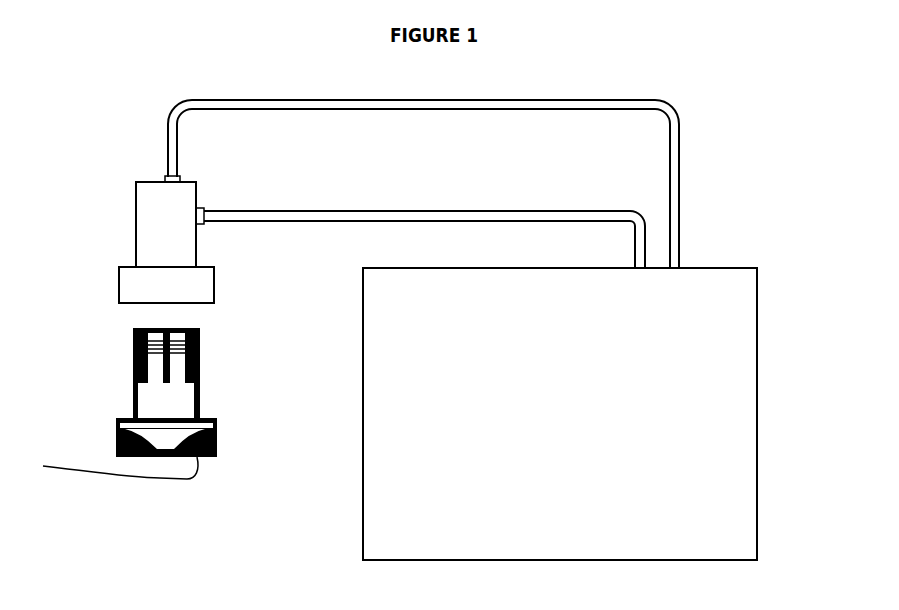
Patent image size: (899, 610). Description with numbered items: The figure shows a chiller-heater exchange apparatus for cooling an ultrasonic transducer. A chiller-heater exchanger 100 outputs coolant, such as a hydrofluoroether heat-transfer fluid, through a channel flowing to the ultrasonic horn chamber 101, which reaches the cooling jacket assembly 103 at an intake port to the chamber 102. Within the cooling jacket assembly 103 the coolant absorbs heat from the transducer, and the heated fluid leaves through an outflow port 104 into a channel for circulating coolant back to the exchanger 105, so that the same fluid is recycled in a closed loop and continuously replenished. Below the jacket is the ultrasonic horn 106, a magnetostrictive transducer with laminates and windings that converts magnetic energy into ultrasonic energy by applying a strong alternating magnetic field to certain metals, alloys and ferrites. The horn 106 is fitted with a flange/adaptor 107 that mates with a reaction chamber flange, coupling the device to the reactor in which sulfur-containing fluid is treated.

The chiller-heater exchanger 100 is at (762, 401).
The channel flowing to ultrasonic horn chamber 101 is at (165, 127).
The intake port to chamber 102 is at (165, 178).
The cooling jacket assembly 103 is at (130, 248).
The outflow port 104 is at (207, 205).
The channel for circulating coolant back to exchanger 105 is at (372, 210).
The ultrasonic horn with magnetostrictive laminates and windings 106 is at (145, 395).
The flange/adaptor for mating with reaction chamber 107 is at (105, 462).